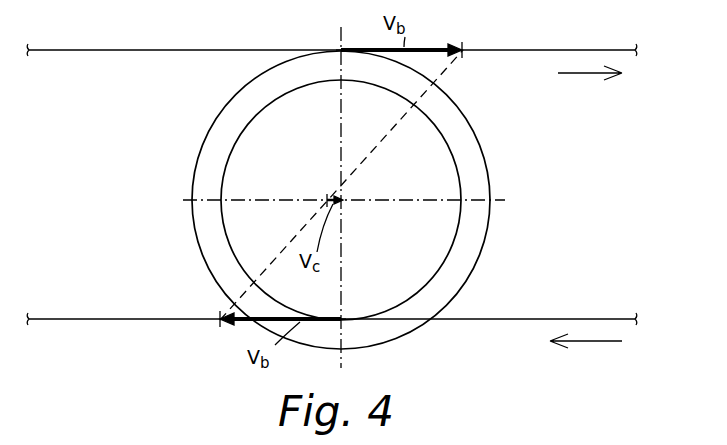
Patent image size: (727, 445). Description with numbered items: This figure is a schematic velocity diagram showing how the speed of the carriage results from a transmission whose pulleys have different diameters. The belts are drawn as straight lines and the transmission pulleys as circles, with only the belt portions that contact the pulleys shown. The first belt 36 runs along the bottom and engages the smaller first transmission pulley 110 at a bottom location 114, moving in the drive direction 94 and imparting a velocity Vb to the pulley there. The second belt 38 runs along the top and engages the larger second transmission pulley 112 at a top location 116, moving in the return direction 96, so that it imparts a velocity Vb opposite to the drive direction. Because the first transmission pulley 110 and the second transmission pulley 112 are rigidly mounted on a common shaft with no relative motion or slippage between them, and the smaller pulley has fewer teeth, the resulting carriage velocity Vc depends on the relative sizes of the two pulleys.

The first belt 36 is at (527, 319).
The second belt 38 is at (531, 50).
The drive direction 94 is at (592, 341).
The return direction 96 is at (583, 73).
The first transmission pulley 110 is at (457, 168).
The second transmission pulley 112 is at (484, 252).
The bottom location 114 is at (344, 322).
The top location 116 is at (339, 49).